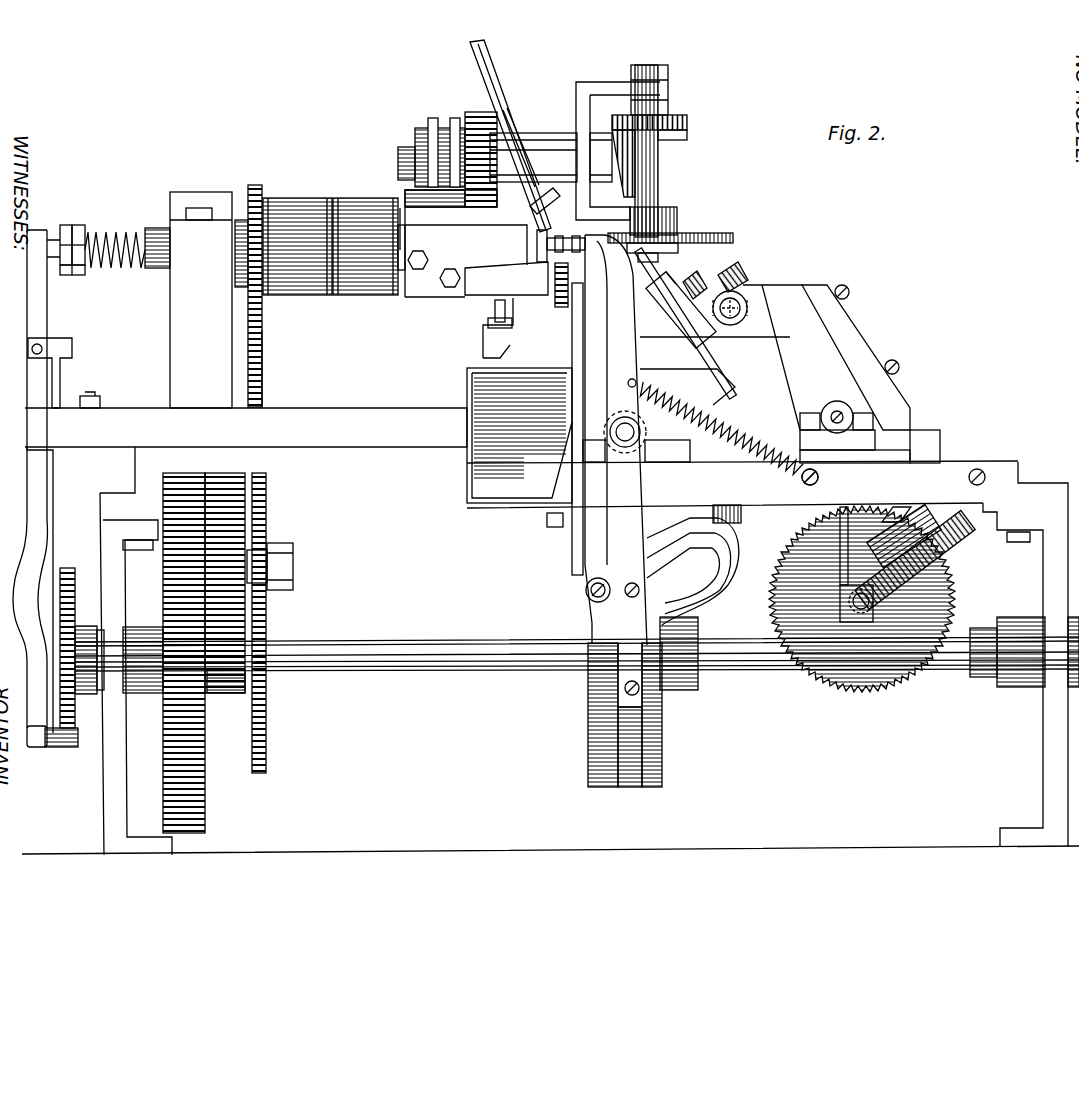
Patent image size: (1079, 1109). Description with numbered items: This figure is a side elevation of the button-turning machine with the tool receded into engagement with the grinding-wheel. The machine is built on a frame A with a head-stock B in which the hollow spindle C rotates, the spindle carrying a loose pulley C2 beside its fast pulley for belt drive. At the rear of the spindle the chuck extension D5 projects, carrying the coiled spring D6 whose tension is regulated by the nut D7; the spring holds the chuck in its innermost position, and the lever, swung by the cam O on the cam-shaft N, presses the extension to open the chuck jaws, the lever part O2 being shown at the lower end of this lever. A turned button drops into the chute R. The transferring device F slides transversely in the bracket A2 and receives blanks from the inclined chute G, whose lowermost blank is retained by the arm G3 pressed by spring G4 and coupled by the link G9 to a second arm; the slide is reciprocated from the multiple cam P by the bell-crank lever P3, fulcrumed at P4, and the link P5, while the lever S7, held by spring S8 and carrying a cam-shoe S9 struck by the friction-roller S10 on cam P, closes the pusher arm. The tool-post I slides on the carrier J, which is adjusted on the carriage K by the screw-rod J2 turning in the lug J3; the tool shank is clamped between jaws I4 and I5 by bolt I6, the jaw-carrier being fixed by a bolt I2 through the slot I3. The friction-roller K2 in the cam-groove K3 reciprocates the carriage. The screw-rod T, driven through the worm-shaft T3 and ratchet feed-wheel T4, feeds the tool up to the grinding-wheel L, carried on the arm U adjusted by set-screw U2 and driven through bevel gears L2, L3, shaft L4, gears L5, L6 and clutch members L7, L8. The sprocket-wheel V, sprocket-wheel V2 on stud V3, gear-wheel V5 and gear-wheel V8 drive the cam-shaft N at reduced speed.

The frame A is at (550, 631).
The bracket A2 is at (508, 262).
The head-stock B is at (455, 215).
The hollow spindle C is at (156, 230).
The loose pulley C2 is at (362, 202).
The chuck extension D5 is at (64, 270).
The spring D6 is at (116, 236).
The nut D7 is at (79, 230).
The transferring device F is at (610, 340).
The chute G is at (510, 136).
The arm G3 is at (516, 133).
The spring G4 is at (536, 208).
The link G9 is at (534, 172).
The tool-post I is at (721, 345).
The bolt I2 is at (744, 332).
The elongated slot I3 is at (748, 315).
The jaw I4 is at (680, 318).
The jaw I5 is at (674, 282).
The bolt I6 is at (700, 276).
The carrier J is at (856, 346).
The screw-rod J2 is at (835, 402).
The lug J3 is at (845, 452).
The carriage K is at (936, 432).
The friction-roller K2 is at (742, 520).
The peripheral cam-groove K3 is at (724, 576).
The grinding-wheel L is at (714, 234).
The bevel gear-wheel L2 is at (686, 127).
The bevel gear-wheel L3 is at (640, 188).
The shaft L4 is at (398, 154).
The gear-wheel L5 is at (476, 112).
The gear-wheel L6 is at (484, 208).
The clutch member L7 is at (455, 118).
The clutch member L8 is at (432, 120).
The cam-shaft N is at (456, 672).
The cam O is at (66, 568).
The stop O2 is at (44, 748).
The multiple cam P is at (588, 716).
The bell-crank lever P3 is at (573, 352).
The fulcrum P4 is at (555, 528).
The link P5 is at (558, 302).
The chute R is at (497, 483).
The lever S7 is at (612, 404).
The spring S8 is at (706, 407).
The cam-shoe S9 is at (646, 660).
The friction-roller S10 is at (586, 596).
The screw-rod T is at (904, 522).
The worm-shaft T3 is at (854, 598).
The ratchet feed-wheel T4 is at (884, 692).
The arm U is at (606, 95).
The set-screw U2 is at (485, 336).
The sprocket-wheel V is at (250, 190).
The sprocket-wheel V2 is at (268, 706).
The stud V3 is at (296, 578).
The gear-wheel V5 is at (228, 696).
The gear-wheel V8 is at (172, 778).